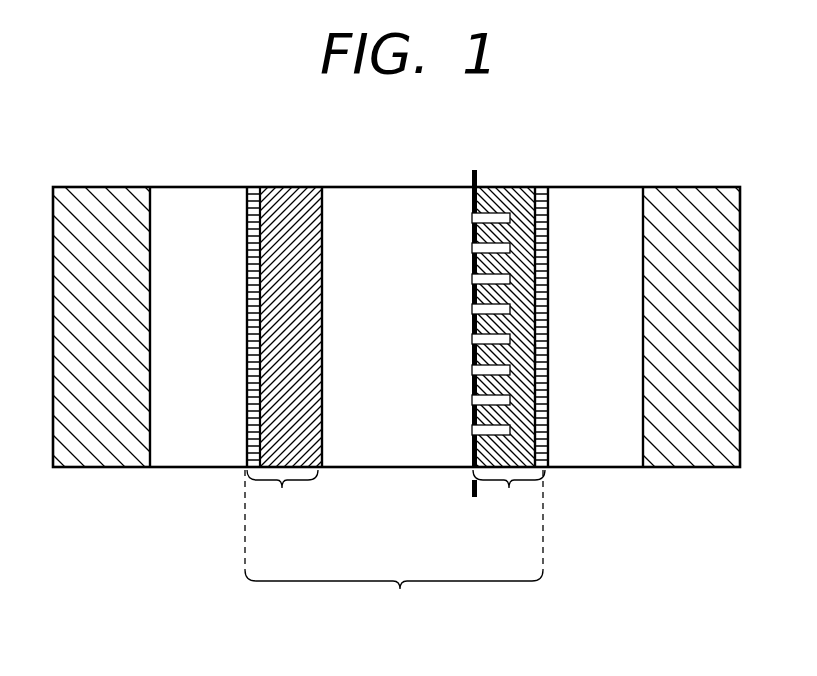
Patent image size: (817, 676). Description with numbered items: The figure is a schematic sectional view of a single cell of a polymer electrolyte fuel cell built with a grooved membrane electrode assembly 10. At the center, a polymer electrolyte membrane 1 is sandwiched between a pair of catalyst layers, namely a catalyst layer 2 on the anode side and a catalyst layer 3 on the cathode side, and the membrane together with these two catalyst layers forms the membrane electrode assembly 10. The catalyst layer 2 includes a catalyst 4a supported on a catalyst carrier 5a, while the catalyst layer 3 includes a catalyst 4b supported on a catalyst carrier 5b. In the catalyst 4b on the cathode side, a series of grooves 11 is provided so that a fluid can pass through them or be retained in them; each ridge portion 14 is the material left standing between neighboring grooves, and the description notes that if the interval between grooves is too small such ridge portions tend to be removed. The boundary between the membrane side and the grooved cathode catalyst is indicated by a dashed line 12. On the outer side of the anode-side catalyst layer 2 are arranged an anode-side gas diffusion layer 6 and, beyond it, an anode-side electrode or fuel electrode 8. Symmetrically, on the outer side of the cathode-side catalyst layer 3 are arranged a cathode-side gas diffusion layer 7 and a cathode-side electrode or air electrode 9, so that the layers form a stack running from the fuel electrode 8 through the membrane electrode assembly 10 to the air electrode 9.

The polymer electrolyte membrane 1 is at (396, 197).
The catalyst layer on anode side 2 is at (281, 328).
The catalyst layer on cathode side 3 is at (452, 315).
The catalyst 4a is at (290, 197).
The catalyst 4b is at (509, 192).
The catalyst carrier 5a is at (254, 197).
The catalyst carrier 5b is at (541, 195).
The anode-side gas diffusion layer 6 is at (198, 197).
The cathode-side gas diffusion layer 7 is at (590, 197).
The anode-side electrode (fuel electrode) 8 is at (97, 197).
The cathode-side electrode (air electrode) 9 is at (692, 200).
The membrane electrode assembly 10 is at (400, 365).
The grooves 11 is at (473, 432).
The boundary line 12 is at (473, 170).
The ridge portion 14 is at (472, 356).